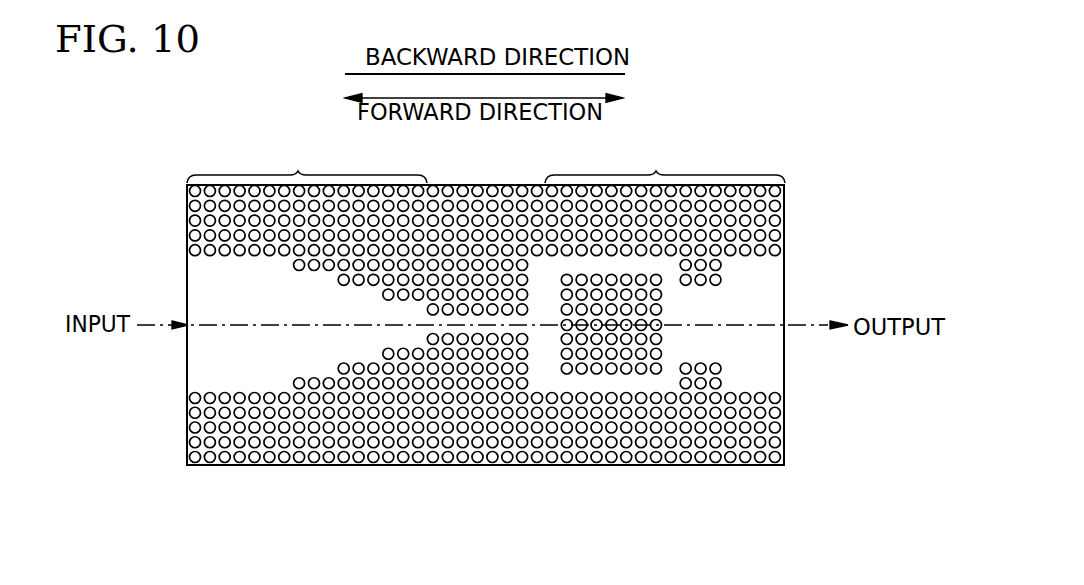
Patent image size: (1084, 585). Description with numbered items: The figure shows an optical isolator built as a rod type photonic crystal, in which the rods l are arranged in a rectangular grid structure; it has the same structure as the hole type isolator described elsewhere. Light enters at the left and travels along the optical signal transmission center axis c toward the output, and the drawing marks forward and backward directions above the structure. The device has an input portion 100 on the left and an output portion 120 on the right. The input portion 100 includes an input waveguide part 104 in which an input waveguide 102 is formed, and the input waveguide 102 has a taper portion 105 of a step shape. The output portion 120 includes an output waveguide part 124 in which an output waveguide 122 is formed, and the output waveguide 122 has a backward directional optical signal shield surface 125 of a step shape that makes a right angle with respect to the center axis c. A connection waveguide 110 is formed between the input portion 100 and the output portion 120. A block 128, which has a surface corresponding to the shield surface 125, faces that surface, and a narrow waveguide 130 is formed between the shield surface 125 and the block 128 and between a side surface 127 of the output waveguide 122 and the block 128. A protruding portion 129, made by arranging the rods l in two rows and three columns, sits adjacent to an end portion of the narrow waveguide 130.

The input portion 100 is at (307, 162).
The second photonic crystal region 120 is at (665, 162).
The input waveguide 102 is at (220, 290).
The input waveguide part 104 is at (198, 221).
The taper portion 105 is at (352, 287).
The connection waveguide 110 is at (472, 330).
The output waveguide 122 is at (768, 350).
The output waveguide part 124 is at (780, 225).
The backward directional optical signal shield surface 125 is at (530, 348).
The side surface of the output waveguide 127 is at (610, 252).
The block 128 is at (618, 355).
The protruding portion 129 is at (718, 378).
The narrow waveguide 130 is at (580, 383).
The optical signal transmission center axis c is at (818, 325).
The rods I is at (745, 458).